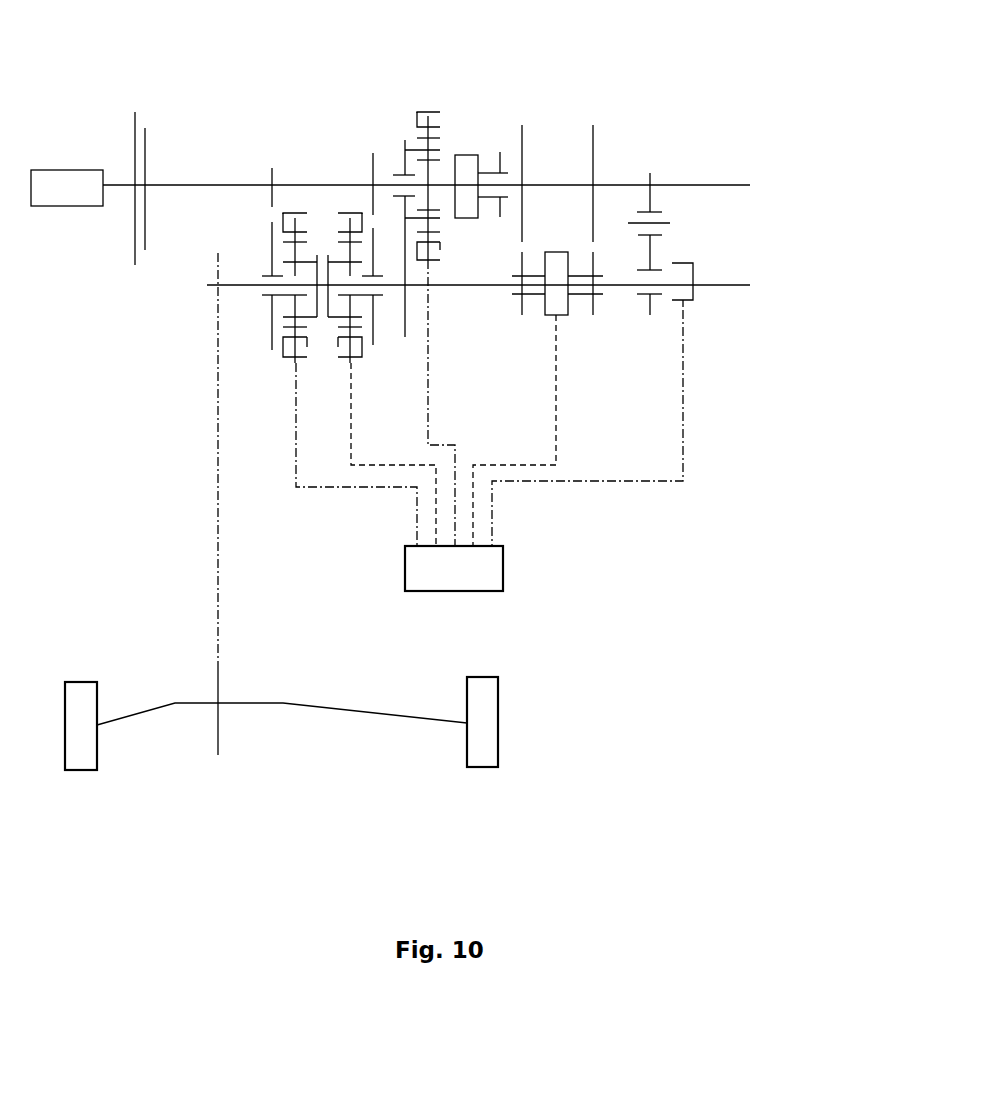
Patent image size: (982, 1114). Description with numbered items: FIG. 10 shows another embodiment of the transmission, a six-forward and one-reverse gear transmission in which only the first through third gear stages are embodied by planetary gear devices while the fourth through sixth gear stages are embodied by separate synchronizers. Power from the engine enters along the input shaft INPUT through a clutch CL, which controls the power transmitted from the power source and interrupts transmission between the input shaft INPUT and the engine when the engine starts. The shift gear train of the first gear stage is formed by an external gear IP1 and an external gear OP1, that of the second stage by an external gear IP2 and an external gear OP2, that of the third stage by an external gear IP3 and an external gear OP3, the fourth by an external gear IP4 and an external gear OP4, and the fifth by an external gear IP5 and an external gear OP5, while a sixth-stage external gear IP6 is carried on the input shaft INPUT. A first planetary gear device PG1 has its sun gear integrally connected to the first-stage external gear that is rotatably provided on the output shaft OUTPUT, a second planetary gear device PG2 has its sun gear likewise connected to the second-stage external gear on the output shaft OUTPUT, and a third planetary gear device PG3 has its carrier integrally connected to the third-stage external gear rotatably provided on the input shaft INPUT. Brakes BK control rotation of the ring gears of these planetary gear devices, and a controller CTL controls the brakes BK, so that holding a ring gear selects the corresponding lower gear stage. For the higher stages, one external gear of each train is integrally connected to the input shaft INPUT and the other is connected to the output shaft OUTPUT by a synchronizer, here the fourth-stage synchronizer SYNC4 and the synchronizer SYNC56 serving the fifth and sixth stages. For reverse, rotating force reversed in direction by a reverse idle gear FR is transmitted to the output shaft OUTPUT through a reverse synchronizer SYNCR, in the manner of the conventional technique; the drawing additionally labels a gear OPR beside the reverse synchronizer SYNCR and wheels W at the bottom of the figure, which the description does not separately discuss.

The clutch CL is at (137, 177).
The external gear IP1 is at (268, 163).
The external gear IP2 is at (369, 151).
The external gear IP3 is at (401, 137).
The external gear IP4 is at (500, 151).
The external gear IP5 is at (524, 124).
The external gear IP6 is at (594, 124).
The external gear OP1 is at (268, 352).
The external gear OP2 is at (373, 348).
The external gear OP3 is at (404, 340).
The external gear OP4 is at (520, 318).
The external gear OP5 is at (596, 314).
The reverse output gear OPR is at (653, 313).
The first planetary gear device PG1 is at (288, 362).
The second planetary gear device PG2 is at (341, 362).
The third planetary gear device PG3 is at (428, 107).
The brake BK is at (343, 213).
The fourth synchronizer SYNC4 is at (467, 151).
The synchronizer SYNC56 is at (570, 318).
The reverse synchronizer SYNCR is at (694, 297).
The reverse idle gear FR is at (652, 204).
The controller CTL is at (450, 459).
The wheel W is at (85, 765).
The input shaft INPUT is at (458, 185).
The output shaft OUTPUT is at (521, 285).
The element engine is at (67, 188).